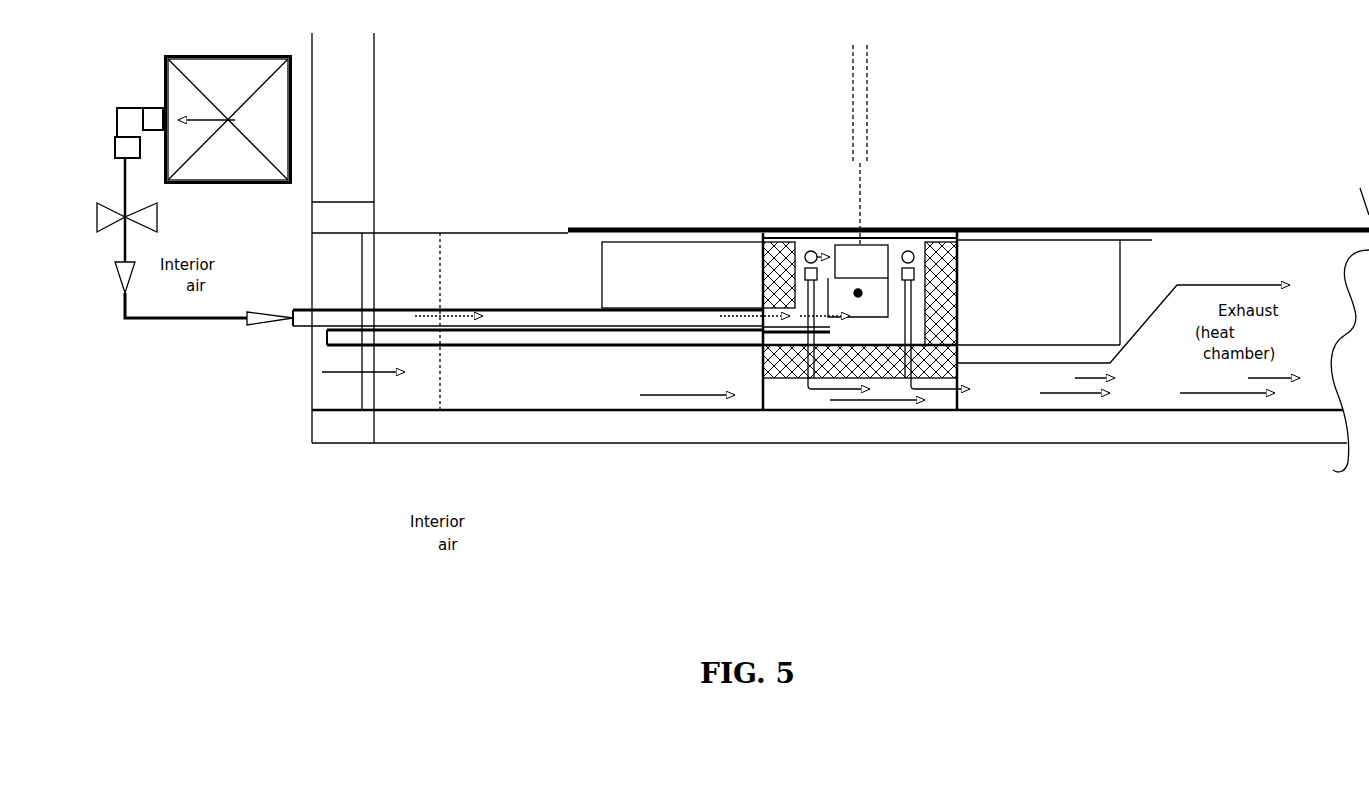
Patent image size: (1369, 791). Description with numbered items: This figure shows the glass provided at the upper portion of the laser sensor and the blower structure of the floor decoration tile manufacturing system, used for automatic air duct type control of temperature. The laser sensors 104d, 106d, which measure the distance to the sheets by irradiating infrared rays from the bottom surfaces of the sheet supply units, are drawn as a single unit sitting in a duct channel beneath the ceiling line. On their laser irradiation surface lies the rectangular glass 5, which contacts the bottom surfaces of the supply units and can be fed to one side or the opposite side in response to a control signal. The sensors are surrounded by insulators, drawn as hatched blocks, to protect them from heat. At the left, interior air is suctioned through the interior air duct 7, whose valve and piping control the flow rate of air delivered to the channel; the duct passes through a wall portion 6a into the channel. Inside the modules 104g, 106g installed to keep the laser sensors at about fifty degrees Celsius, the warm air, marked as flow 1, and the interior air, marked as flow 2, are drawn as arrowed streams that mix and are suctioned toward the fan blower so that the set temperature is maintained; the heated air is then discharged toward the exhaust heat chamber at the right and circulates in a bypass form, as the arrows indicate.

The warm air 1 is at (485, 315).
The interior air 2 is at (418, 374).
The rectangular glass 5 is at (733, 230).
The wall 6a is at (362, 412).
The interior air duct 7 is at (225, 78).
The laser sensor 104d is at (931, 181).
The laser sensor 106d is at (868, 262).
The module 104g is at (956, 302).
The module 106g is at (863, 294).